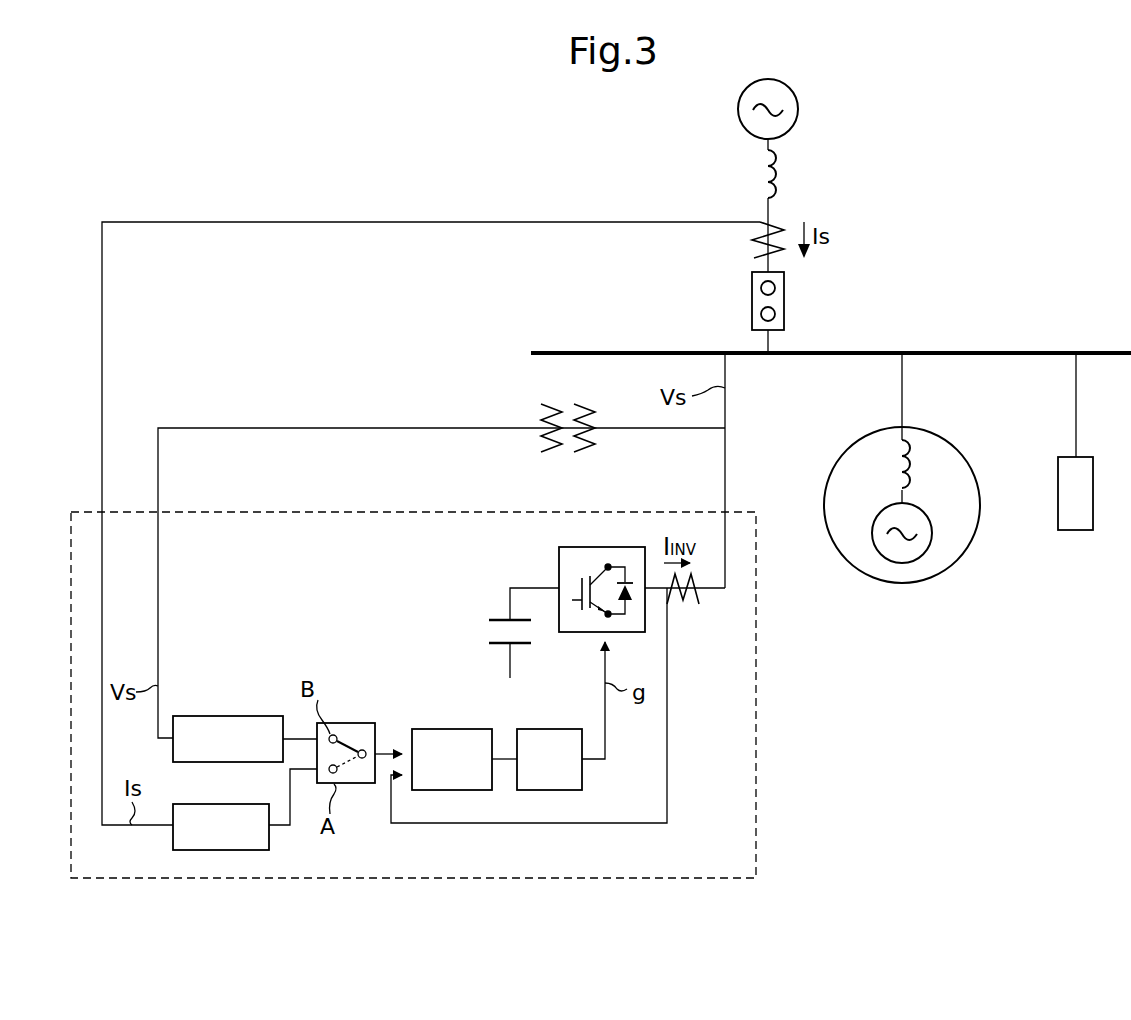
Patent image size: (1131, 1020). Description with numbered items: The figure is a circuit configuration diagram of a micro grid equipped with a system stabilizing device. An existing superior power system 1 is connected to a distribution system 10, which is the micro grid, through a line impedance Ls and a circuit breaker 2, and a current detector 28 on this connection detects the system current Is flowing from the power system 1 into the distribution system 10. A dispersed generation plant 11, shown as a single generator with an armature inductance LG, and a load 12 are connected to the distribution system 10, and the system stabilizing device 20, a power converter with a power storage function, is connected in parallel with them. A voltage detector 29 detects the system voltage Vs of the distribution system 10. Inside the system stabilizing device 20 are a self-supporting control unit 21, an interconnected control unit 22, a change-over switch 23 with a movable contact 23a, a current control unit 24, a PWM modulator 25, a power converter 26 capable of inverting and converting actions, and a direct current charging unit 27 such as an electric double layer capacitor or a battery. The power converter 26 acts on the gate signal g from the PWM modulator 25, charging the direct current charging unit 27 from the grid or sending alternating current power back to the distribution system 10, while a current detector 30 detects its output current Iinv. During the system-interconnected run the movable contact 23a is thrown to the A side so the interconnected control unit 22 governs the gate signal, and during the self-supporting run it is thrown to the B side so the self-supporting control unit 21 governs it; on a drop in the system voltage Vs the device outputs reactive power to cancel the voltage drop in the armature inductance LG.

The superior power system 1 is at (799, 96).
The line impedance Ls is at (788, 174).
The current detector 28 is at (760, 236).
The circuit breaker 2 is at (752, 300).
The distribution system 10 is at (965, 350).
The voltage detector 29 is at (553, 454).
The dispersed generation plant 11 is at (850, 582).
The armature inductance LG is at (920, 447).
The load 12 is at (1074, 531).
The system stabilizing device 20 is at (756, 783).
The self-supporting control unit 21 is at (230, 716).
The interconnected control unit 22 is at (232, 804).
The change-over switch 23 is at (365, 722).
The movable contact 23a is at (355, 733).
The current control unit 24 is at (442, 728).
The PWM modulator 25 is at (547, 728).
The power converter 26 is at (559, 557).
The direct current charging unit 27 is at (483, 632).
The current detector 30 is at (690, 605).